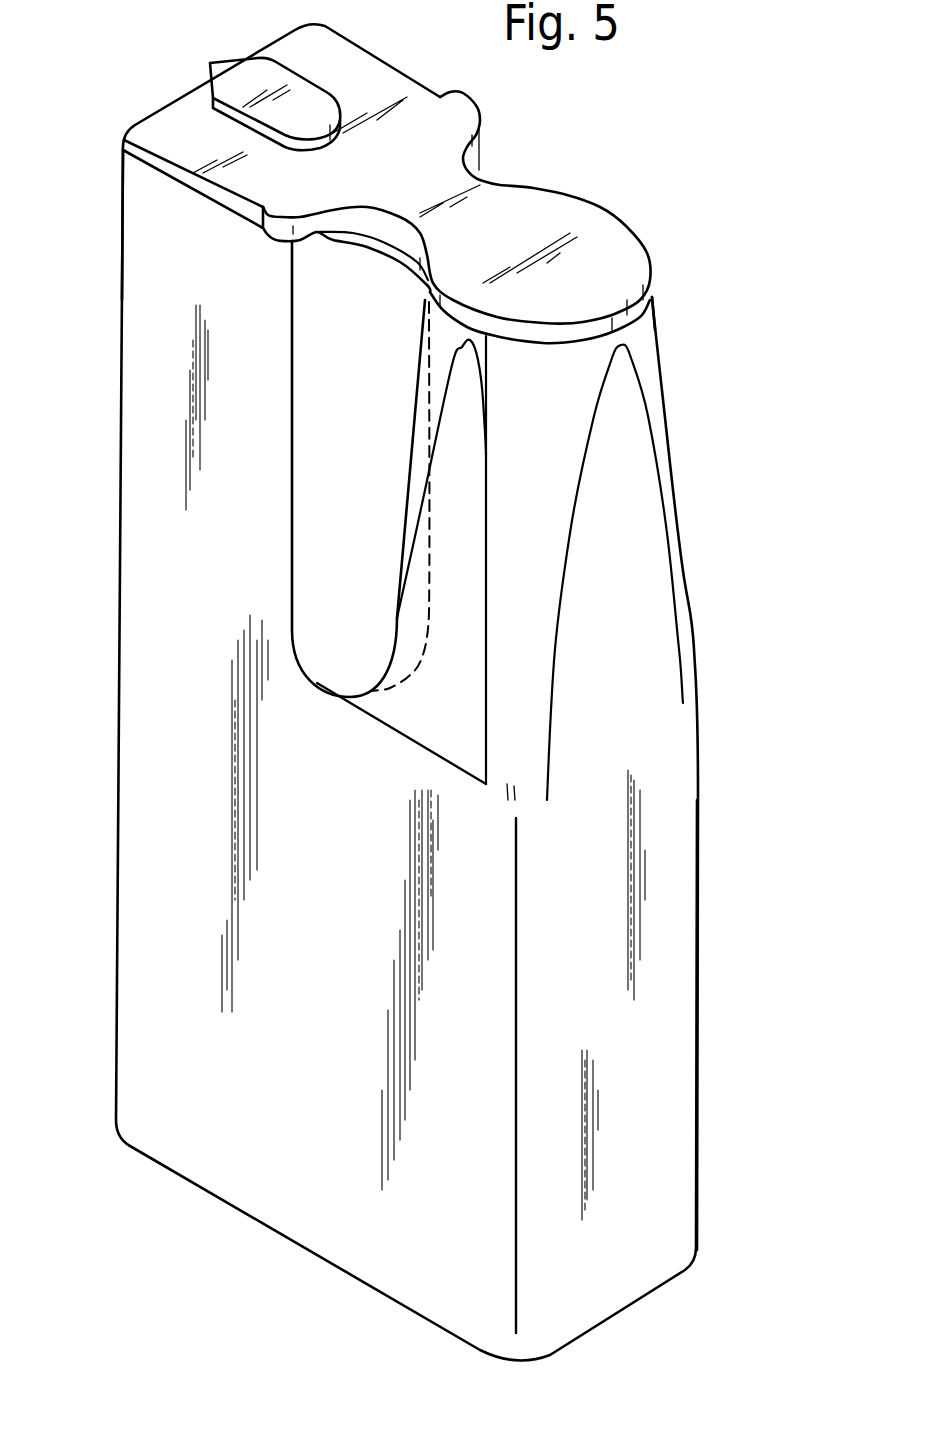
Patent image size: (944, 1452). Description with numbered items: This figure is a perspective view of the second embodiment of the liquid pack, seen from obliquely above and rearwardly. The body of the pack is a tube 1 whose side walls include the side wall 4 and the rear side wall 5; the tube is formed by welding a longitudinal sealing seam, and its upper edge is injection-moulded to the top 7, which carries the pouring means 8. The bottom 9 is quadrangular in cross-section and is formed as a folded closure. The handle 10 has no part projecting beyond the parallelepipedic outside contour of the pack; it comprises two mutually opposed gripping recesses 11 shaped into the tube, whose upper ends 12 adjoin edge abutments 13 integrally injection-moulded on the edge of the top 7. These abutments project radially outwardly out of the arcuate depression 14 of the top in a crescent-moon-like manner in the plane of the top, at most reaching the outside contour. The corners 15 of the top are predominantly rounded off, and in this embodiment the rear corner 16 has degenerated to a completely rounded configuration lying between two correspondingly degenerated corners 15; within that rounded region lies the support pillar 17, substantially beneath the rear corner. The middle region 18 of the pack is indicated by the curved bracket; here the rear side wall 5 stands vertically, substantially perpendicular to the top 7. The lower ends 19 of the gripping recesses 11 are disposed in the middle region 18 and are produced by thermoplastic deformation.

The tube 1 is at (102, 509).
The side wall 4 is at (298, 951).
The rear side wall 5 is at (620, 1041).
The top 7 is at (440, 119).
The pouring means 8 is at (220, 90).
The bottom 9 is at (232, 1217).
The handle 10 is at (281, 561).
The gripping recesses 11 is at (507, 183).
The upper ends 12 is at (350, 248).
The edge abutments 13 is at (355, 238).
The arcuate depression 14 is at (392, 216).
The corners 15 is at (124, 140).
The rear corner 16 is at (652, 298).
The support pillar 17 is at (621, 498).
The middle region 18 is at (706, 734).
The lower ends 19 is at (336, 676).